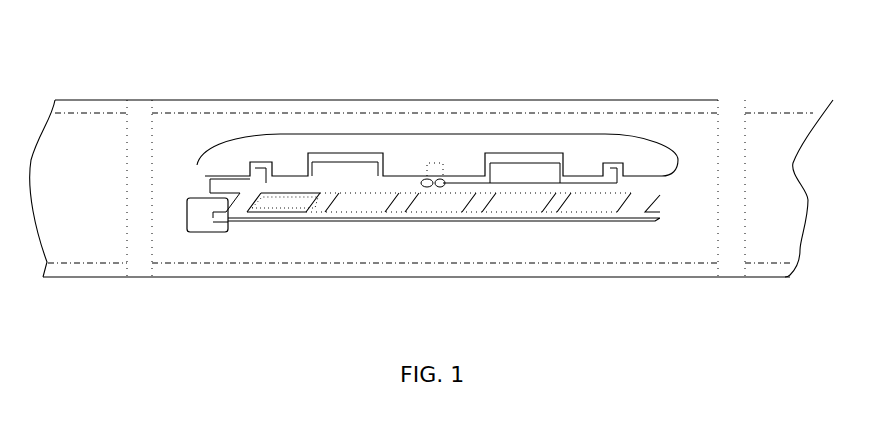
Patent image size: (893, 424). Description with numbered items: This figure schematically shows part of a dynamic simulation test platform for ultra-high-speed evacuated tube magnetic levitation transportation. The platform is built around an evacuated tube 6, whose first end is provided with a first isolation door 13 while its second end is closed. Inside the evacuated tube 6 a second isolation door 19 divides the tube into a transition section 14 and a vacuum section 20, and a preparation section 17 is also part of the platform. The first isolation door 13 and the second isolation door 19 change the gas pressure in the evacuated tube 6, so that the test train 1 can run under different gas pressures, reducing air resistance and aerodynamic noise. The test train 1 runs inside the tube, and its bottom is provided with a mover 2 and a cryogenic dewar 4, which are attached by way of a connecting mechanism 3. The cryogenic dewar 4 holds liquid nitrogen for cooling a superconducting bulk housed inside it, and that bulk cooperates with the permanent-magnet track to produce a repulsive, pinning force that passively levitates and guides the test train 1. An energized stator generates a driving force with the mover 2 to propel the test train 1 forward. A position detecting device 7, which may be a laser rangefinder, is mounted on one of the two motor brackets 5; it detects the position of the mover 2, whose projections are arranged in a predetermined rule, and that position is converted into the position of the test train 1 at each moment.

The test train 1 is at (242, 155).
The mover 2 is at (288, 211).
The connecting mechanism 3 is at (437, 186).
The cryogenic dewar 4 is at (553, 176).
The motor bracket 5 is at (212, 238).
The evacuated tube 6 is at (170, 278).
The position detecting device 7 is at (223, 235).
The first isolation door 13 is at (138, 111).
The transition section 14 is at (300, 127).
The preparation section 17 is at (100, 134).
The second isolation door 19 is at (731, 113).
The vacuum section 20 is at (777, 255).